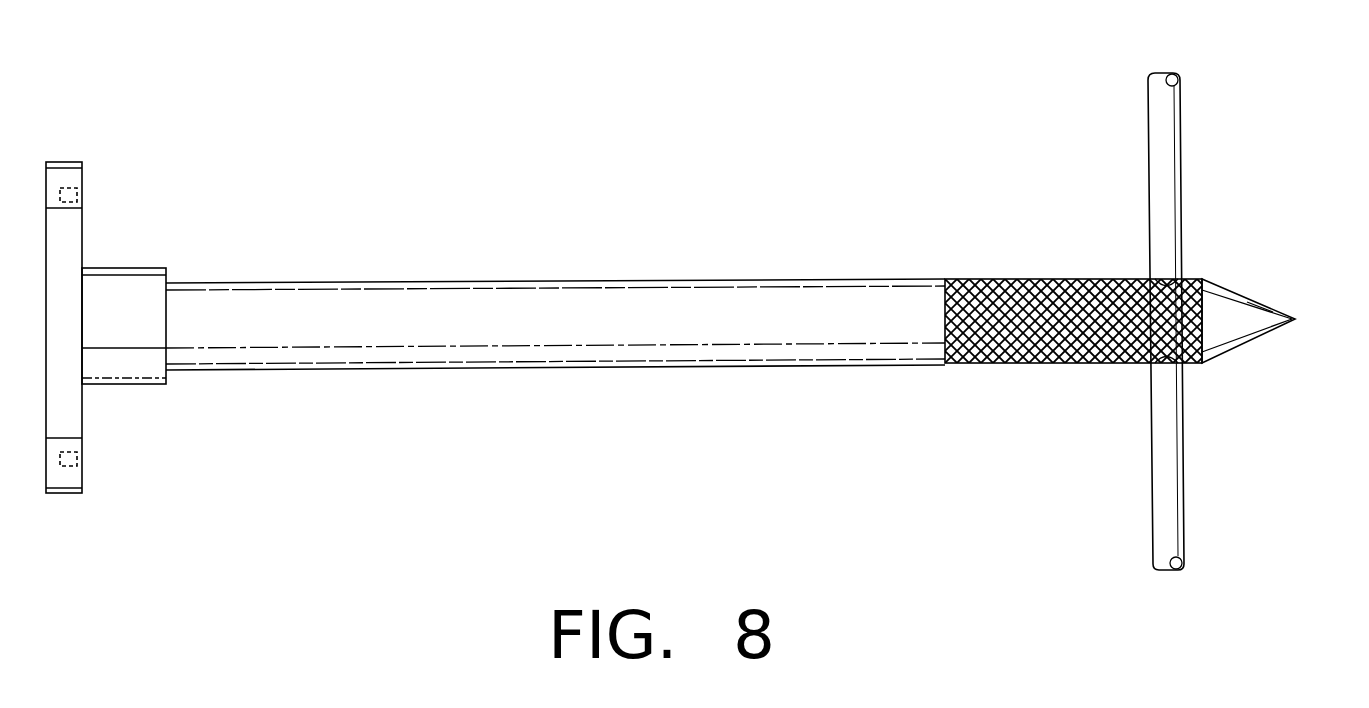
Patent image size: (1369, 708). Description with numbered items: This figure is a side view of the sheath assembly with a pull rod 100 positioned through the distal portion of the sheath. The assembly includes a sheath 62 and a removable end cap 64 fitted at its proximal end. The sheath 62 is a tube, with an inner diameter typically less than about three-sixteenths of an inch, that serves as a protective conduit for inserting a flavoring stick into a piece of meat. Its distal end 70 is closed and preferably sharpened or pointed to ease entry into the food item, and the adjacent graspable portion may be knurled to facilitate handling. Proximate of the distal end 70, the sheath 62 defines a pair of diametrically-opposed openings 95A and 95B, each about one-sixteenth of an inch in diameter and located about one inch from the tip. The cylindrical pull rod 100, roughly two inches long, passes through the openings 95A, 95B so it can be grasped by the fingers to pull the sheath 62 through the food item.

The removable end cap 64 is at (109, 403).
The sheath 62 is at (631, 378).
The distal end 70 is at (1292, 299).
The pull rod 100 is at (1136, 131).
The opening 95B is at (1162, 285).
The opening 95A is at (1158, 357).